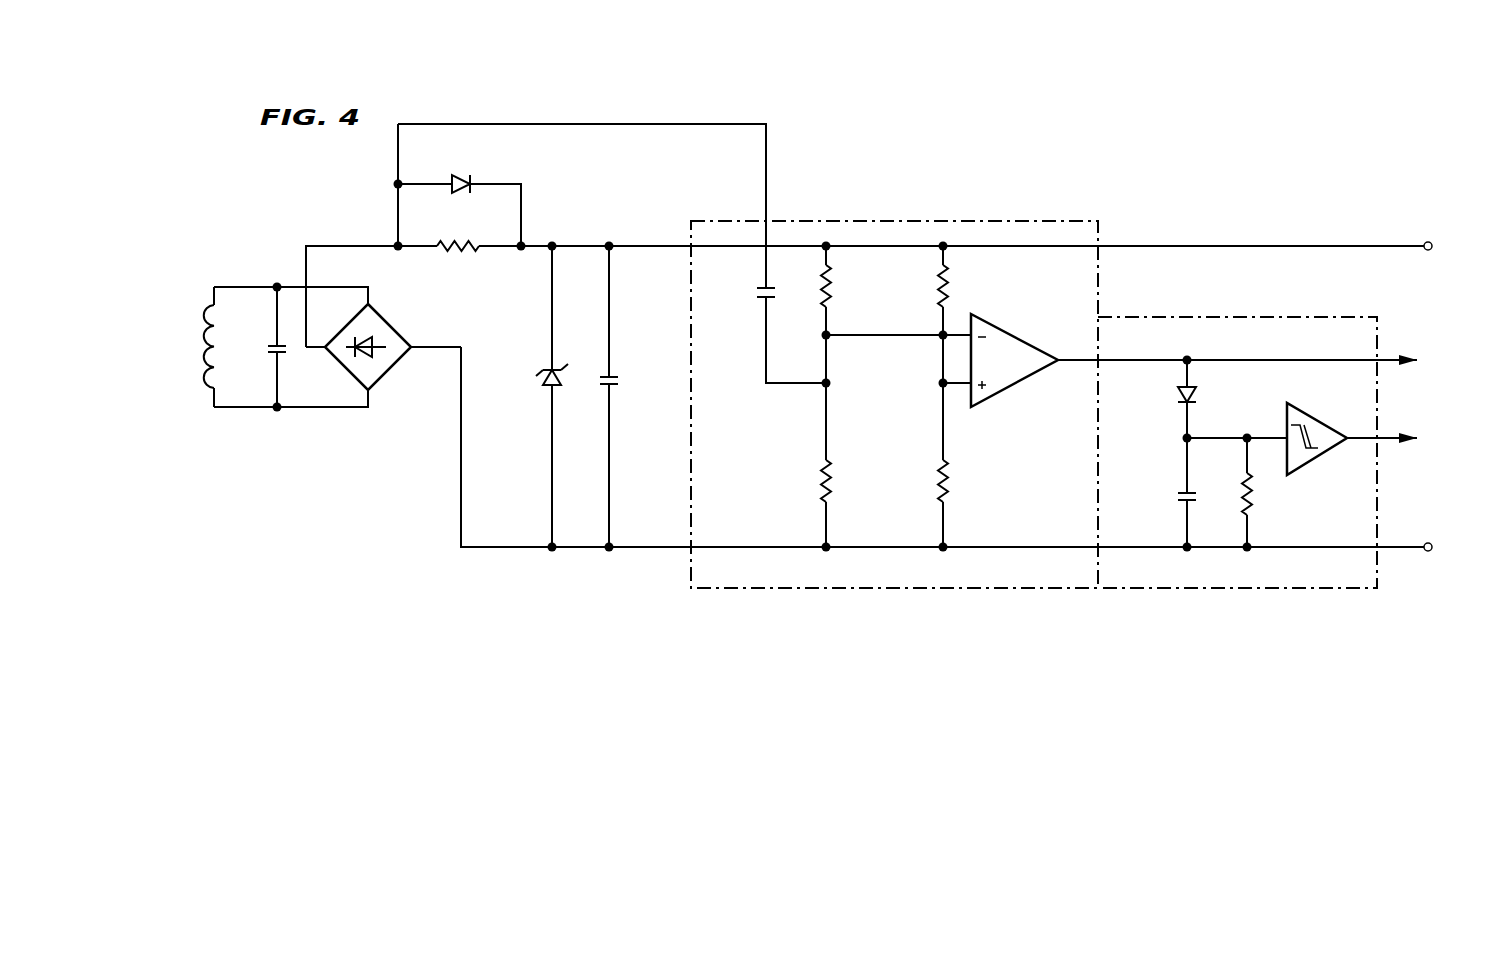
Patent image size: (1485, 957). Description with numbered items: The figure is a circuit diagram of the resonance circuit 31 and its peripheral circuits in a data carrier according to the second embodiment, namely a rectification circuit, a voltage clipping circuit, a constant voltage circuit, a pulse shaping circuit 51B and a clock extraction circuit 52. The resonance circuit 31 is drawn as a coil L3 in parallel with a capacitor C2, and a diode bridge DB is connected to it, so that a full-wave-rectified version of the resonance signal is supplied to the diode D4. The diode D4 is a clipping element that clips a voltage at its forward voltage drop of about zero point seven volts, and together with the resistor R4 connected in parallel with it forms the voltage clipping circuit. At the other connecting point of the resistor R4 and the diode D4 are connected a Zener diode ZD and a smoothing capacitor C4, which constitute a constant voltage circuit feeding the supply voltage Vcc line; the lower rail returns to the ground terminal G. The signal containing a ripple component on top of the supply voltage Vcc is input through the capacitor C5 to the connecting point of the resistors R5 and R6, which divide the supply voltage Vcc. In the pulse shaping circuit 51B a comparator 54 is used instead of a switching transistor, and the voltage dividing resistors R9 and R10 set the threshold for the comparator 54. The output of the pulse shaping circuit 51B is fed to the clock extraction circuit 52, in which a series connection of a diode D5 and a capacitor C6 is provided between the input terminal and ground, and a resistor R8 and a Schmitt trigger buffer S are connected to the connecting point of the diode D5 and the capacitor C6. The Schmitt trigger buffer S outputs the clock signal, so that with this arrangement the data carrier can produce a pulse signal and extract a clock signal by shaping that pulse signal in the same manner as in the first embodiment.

The coil L3 is at (204, 388).
The resonance circuit 31 is at (246, 388).
The capacitor C2 is at (267, 346).
The diode bridge DB is at (388, 376).
The diode D4 is at (462, 170).
The resistor R4 is at (458, 258).
The Zener diode ZD is at (531, 380).
The smoothing capacitor C4 is at (626, 384).
The capacitor C5 is at (746, 293).
The resistor R5 is at (844, 286).
The voltage dividing resistor R9 is at (961, 286).
The resistor R6 is at (807, 481).
The voltage dividing resistor R10 is at (968, 481).
The comparator 54 is at (1020, 384).
The pulse shaping circuit 51B is at (1033, 221).
The clock extraction circuit 52 is at (1320, 317).
The diode D5 is at (1168, 398).
The Schmitt trigger buffer S is at (1320, 420).
The capacitor C6 is at (1168, 505).
The resistor R8 is at (1264, 495).
The supply voltage Vcc is at (1450, 246).
The ground terminal G is at (1439, 547).